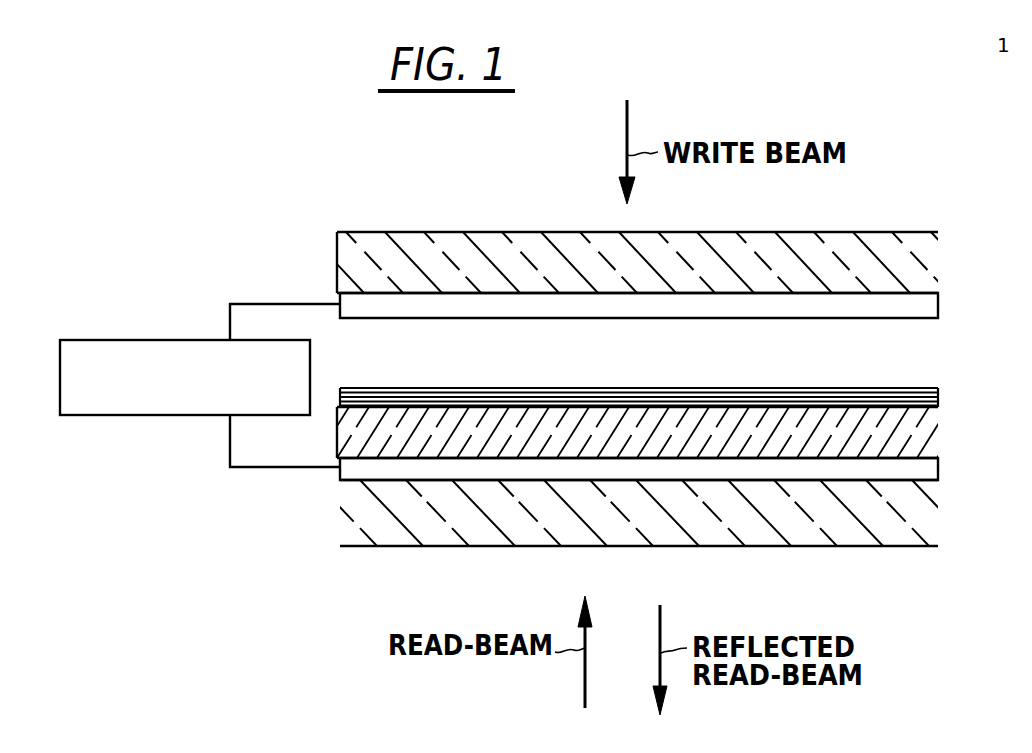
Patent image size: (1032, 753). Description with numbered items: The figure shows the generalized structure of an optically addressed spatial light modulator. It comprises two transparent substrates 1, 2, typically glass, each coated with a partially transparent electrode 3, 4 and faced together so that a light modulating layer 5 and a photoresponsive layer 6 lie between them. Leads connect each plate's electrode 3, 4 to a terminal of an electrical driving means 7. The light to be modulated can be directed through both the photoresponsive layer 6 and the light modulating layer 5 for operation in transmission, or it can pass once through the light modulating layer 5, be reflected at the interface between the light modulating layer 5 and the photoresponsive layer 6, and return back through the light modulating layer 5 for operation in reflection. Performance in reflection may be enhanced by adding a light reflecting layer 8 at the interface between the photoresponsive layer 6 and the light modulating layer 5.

The transparent substrate 1 is at (923, 272).
The transparent substrate 2 is at (918, 517).
The partially transparent electrode 3 is at (927, 312).
The partially transparent electrode 4 is at (925, 475).
The light modulating layer 5 is at (928, 441).
The photoresponsive layer 6 is at (918, 364).
The electrical driving means 7 is at (98, 340).
The light reflecting layer 8 is at (940, 404).